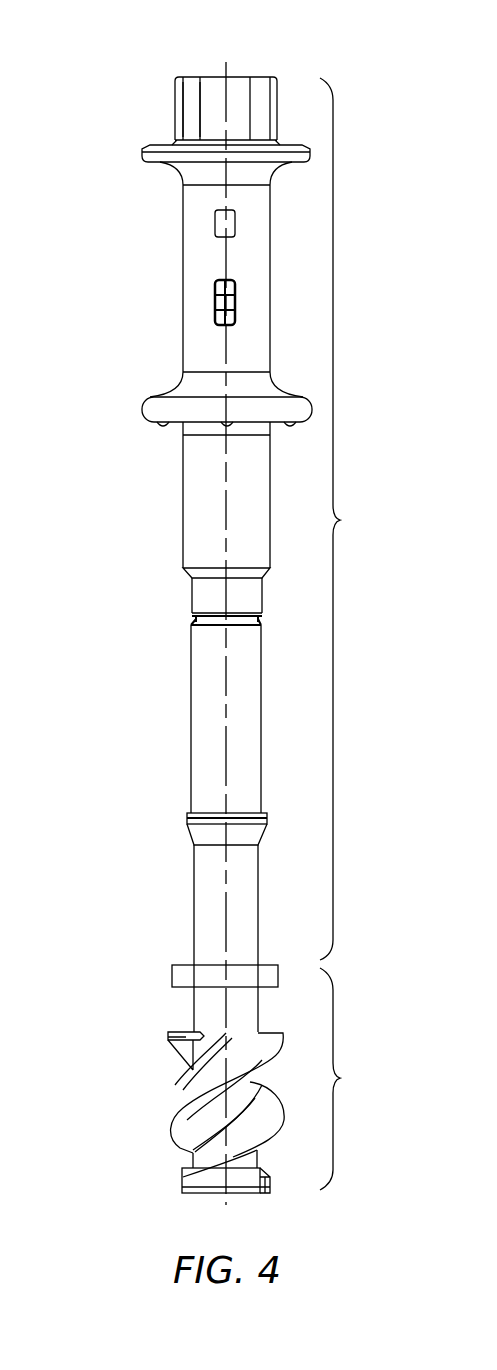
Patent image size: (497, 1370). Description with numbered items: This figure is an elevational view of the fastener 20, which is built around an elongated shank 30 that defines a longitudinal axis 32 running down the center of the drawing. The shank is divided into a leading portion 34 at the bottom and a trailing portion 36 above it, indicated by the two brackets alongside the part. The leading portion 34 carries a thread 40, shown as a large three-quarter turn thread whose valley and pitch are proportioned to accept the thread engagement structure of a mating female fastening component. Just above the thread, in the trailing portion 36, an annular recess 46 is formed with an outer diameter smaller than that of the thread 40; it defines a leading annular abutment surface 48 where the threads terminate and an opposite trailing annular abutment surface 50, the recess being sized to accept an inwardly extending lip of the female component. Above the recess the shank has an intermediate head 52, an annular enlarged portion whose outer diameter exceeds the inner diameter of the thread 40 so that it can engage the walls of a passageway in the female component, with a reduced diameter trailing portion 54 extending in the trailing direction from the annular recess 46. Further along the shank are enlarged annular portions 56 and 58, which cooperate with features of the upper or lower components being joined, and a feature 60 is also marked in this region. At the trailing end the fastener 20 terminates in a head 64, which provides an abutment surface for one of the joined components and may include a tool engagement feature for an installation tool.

The fastener 20 is at (181, 233).
The elongated shank 30 is at (118, 514).
The longitudinal axis 32 is at (227, 110).
The leading portion 34 is at (349, 1079).
The trailing portion 36 is at (349, 519).
The thread 40 is at (194, 1121).
The annular recess 46 is at (240, 997).
The leading annular abutment surface 48 is at (170, 1037).
The trailing annular abutment surface 50 is at (180, 989).
The intermediate head 52 is at (182, 977).
The reduced diameter trailing portion 54 is at (180, 963).
The enlarged annular portion 56 is at (197, 818).
The enlarged annular portion 58 is at (153, 410).
The groove 60 is at (200, 622).
The head 64 is at (188, 110).